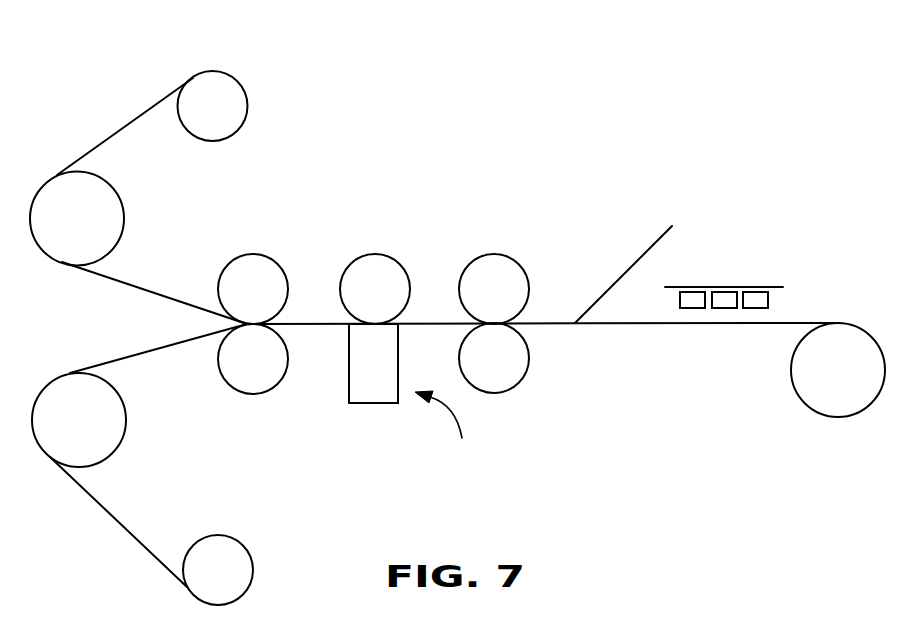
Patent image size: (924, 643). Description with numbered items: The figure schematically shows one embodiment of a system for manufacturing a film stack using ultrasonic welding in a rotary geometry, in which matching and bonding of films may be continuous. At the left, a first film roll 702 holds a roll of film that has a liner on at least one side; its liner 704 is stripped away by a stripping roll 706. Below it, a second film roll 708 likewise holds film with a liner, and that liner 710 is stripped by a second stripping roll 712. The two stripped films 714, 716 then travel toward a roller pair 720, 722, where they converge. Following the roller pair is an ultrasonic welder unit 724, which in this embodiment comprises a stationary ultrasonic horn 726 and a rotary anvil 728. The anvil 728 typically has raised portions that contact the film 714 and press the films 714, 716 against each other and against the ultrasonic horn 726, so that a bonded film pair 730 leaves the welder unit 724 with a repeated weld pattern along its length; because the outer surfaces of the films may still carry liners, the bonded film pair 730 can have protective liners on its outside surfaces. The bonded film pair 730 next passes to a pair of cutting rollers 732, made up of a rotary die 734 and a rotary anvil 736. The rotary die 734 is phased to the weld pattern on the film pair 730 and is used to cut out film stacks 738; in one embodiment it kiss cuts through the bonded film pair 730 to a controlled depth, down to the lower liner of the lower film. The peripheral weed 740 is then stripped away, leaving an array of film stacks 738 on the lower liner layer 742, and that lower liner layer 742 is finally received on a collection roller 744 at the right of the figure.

The first film roll 702 is at (123, 197).
The liner 704 is at (103, 140).
The stripping roll 706 is at (243, 83).
The second film roll 708 is at (118, 443).
The liner 710 is at (127, 535).
The second stripping roll 712 is at (253, 572).
The stripped film 714 is at (153, 293).
The stripped film 716 is at (157, 352).
The roller 720 is at (257, 256).
The roller 722 is at (258, 395).
The ultrasonic welder unit 724 is at (452, 431).
The stationary ultrasonic horn 726 is at (373, 403).
The rotary anvil 728 is at (372, 255).
The bonded film pair 730 is at (435, 323).
The pair of cutting rollers 732 is at (492, 255).
The rotary die 734 is at (528, 288).
The rotary anvil 736 is at (503, 392).
The peripheral weed 740 is at (662, 237).
The film stacks 738 is at (708, 287).
The lower liner layer 742 is at (725, 323).
The collection roller 744 is at (835, 413).